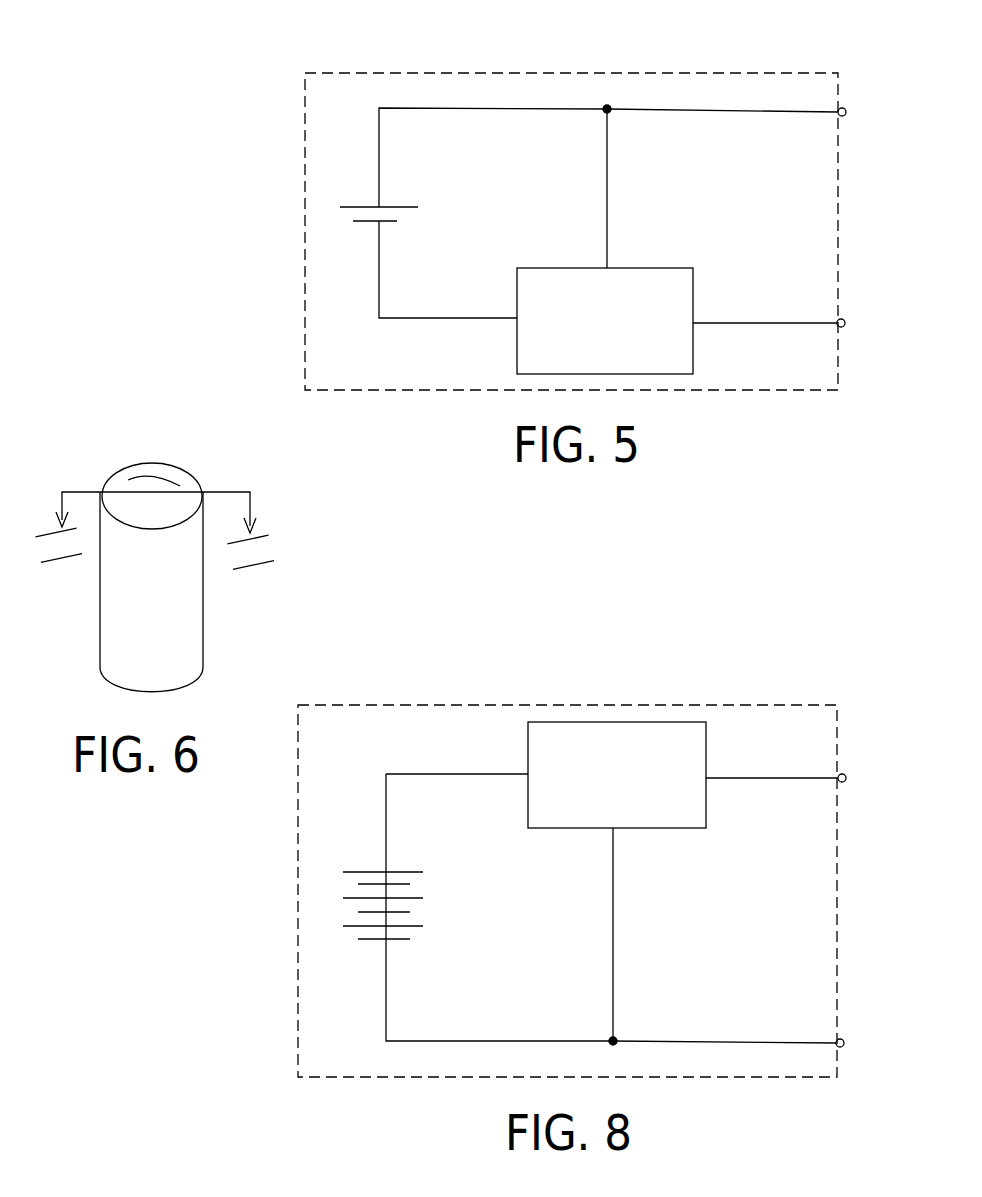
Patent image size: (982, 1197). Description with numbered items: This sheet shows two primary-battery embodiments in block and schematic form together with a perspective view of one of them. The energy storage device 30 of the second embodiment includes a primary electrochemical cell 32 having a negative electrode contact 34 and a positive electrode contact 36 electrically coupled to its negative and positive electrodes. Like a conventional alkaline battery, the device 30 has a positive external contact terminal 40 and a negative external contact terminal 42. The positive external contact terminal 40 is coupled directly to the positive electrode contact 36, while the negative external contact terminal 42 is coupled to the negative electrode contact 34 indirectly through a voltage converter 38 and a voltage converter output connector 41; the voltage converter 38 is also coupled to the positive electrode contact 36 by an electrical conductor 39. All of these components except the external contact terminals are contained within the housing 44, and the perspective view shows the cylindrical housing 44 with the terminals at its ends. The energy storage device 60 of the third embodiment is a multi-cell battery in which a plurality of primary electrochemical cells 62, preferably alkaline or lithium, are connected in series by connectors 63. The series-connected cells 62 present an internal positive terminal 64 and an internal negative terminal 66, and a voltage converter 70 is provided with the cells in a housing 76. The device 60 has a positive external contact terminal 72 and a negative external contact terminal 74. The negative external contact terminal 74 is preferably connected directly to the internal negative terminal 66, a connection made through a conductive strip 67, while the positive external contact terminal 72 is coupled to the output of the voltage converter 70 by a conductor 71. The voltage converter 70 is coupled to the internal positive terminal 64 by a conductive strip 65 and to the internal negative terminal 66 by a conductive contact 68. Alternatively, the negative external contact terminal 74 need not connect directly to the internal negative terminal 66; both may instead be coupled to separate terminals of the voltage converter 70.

In FIG. 5, the energy storage device 30 is at (583, 41).
In FIG. 6, the energy storage device 30 is at (138, 421).
In FIG. 5, the primary electrochemical cell 32 is at (402, 220).
In FIG. 5, the negative electrode contact 34 is at (379, 292).
In FIG. 5, the positive electrode contact 36 is at (379, 143).
In FIG. 5, the voltage converter 38 is at (640, 268).
In FIG. 5, the electrical conductor 39 is at (607, 188).
In FIG. 5, the positive external contact terminal 40 is at (848, 110).
In FIG. 6, the positive external contact terminal 40 is at (163, 694).
In FIG. 5, the voltage converter output connector 41 is at (758, 316).
In FIG. 5, the negative external contact terminal 42 is at (848, 322).
In FIG. 6, the negative external contact terminal 42 is at (170, 470).
In FIG. 5, the housing 44 is at (665, 73).
In FIG. 6, the housing 44 is at (192, 622).
In FIG. 8, the energy storage device 60 is at (540, 671).
In FIG. 8, the primary electrochemical cells 62 is at (347, 930).
In FIG. 8, the connectors 63 is at (386, 893).
In FIG. 8, the internal positive terminal 64 is at (386, 828).
In FIG. 8, the conductive strip 65 is at (468, 772).
In FIG. 8, the internal negative terminal 66 is at (386, 1012).
In FIG. 8, the conductive strip 67 is at (700, 1035).
In FIG. 8, the conductive contact 68 is at (613, 932).
In FIG. 8, the voltage converter 70 is at (668, 828).
In FIG. 8, the conductor 71 is at (765, 782).
In FIG. 8, the positive external contact terminal 72 is at (848, 775).
In FIG. 8, the negative external contact terminal 74 is at (846, 1042).
In FIG. 8, the housing 76 is at (590, 705).